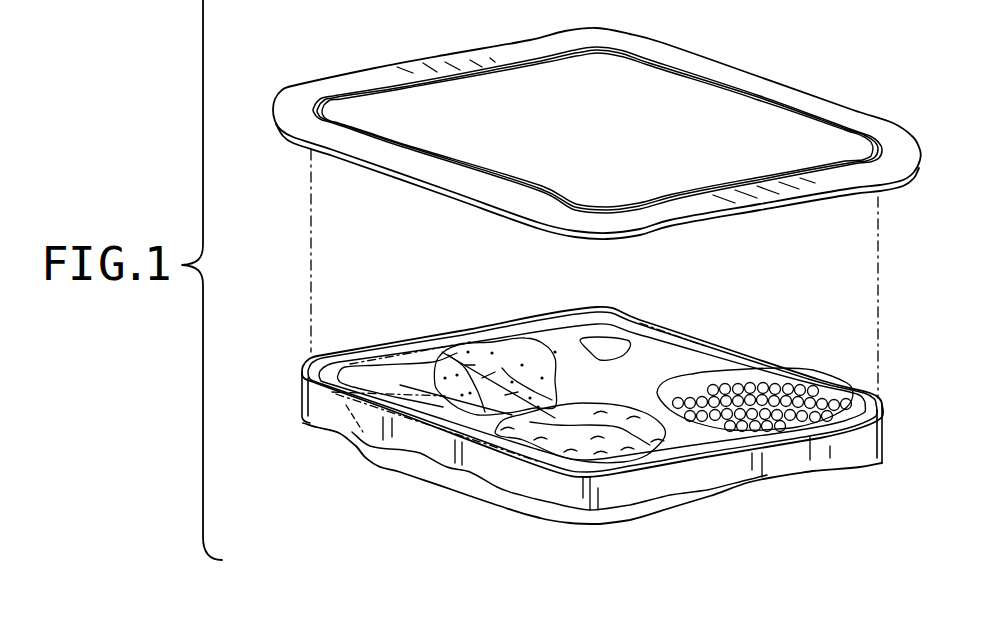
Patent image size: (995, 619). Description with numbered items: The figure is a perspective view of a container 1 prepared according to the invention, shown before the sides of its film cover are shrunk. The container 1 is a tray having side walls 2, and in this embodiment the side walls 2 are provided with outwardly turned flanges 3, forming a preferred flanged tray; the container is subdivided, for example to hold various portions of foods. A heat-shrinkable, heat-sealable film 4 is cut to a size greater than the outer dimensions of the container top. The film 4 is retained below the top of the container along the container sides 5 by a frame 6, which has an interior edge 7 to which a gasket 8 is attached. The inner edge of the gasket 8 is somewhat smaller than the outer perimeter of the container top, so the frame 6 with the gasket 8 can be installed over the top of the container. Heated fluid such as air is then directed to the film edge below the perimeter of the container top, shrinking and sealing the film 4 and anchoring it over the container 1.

The container 1 is at (557, 428).
The side walls 2 is at (410, 458).
The outwardly turned flanges 3 is at (777, 377).
The heat-shrinkable, heat-sealable film 4 is at (843, 467).
The container sides 5 is at (317, 403).
The frame 6 is at (737, 73).
The interior edge 7 is at (830, 170).
The gasket 8 is at (505, 182).